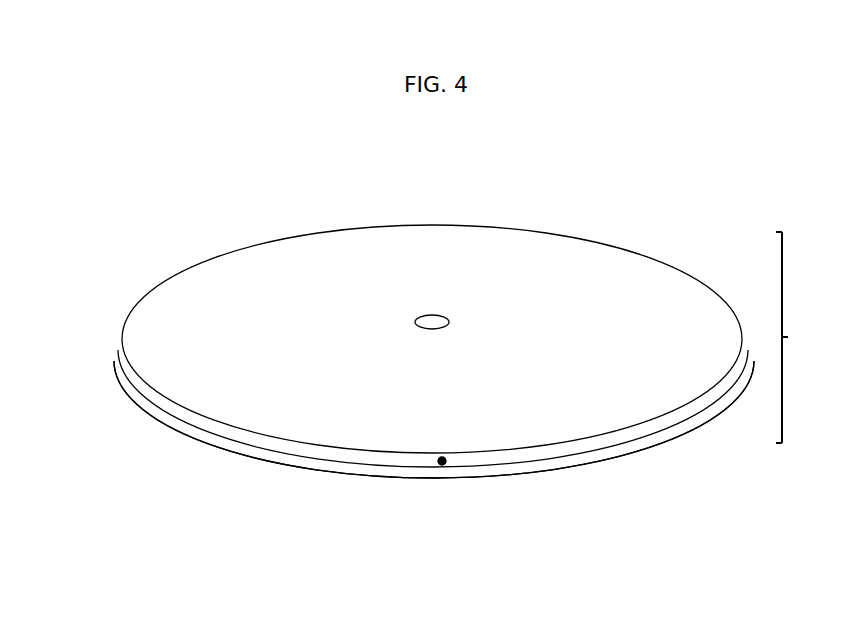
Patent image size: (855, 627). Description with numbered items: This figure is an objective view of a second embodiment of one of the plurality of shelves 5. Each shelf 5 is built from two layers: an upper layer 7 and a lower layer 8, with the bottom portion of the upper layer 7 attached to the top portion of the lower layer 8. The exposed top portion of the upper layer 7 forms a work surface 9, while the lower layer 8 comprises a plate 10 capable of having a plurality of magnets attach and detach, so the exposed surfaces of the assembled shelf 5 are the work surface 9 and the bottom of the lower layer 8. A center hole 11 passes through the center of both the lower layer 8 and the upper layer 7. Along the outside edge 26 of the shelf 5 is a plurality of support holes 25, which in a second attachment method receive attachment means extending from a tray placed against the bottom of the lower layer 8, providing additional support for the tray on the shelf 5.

The shelf 5 is at (794, 337).
The upper layer 7 is at (283, 244).
The lower layer 8 is at (660, 451).
The work surface 9 is at (560, 356).
The plate 10 is at (434, 419).
The center hole 11 is at (424, 311).
The support holes 25 is at (428, 471).
The outside edge 26 is at (172, 355).